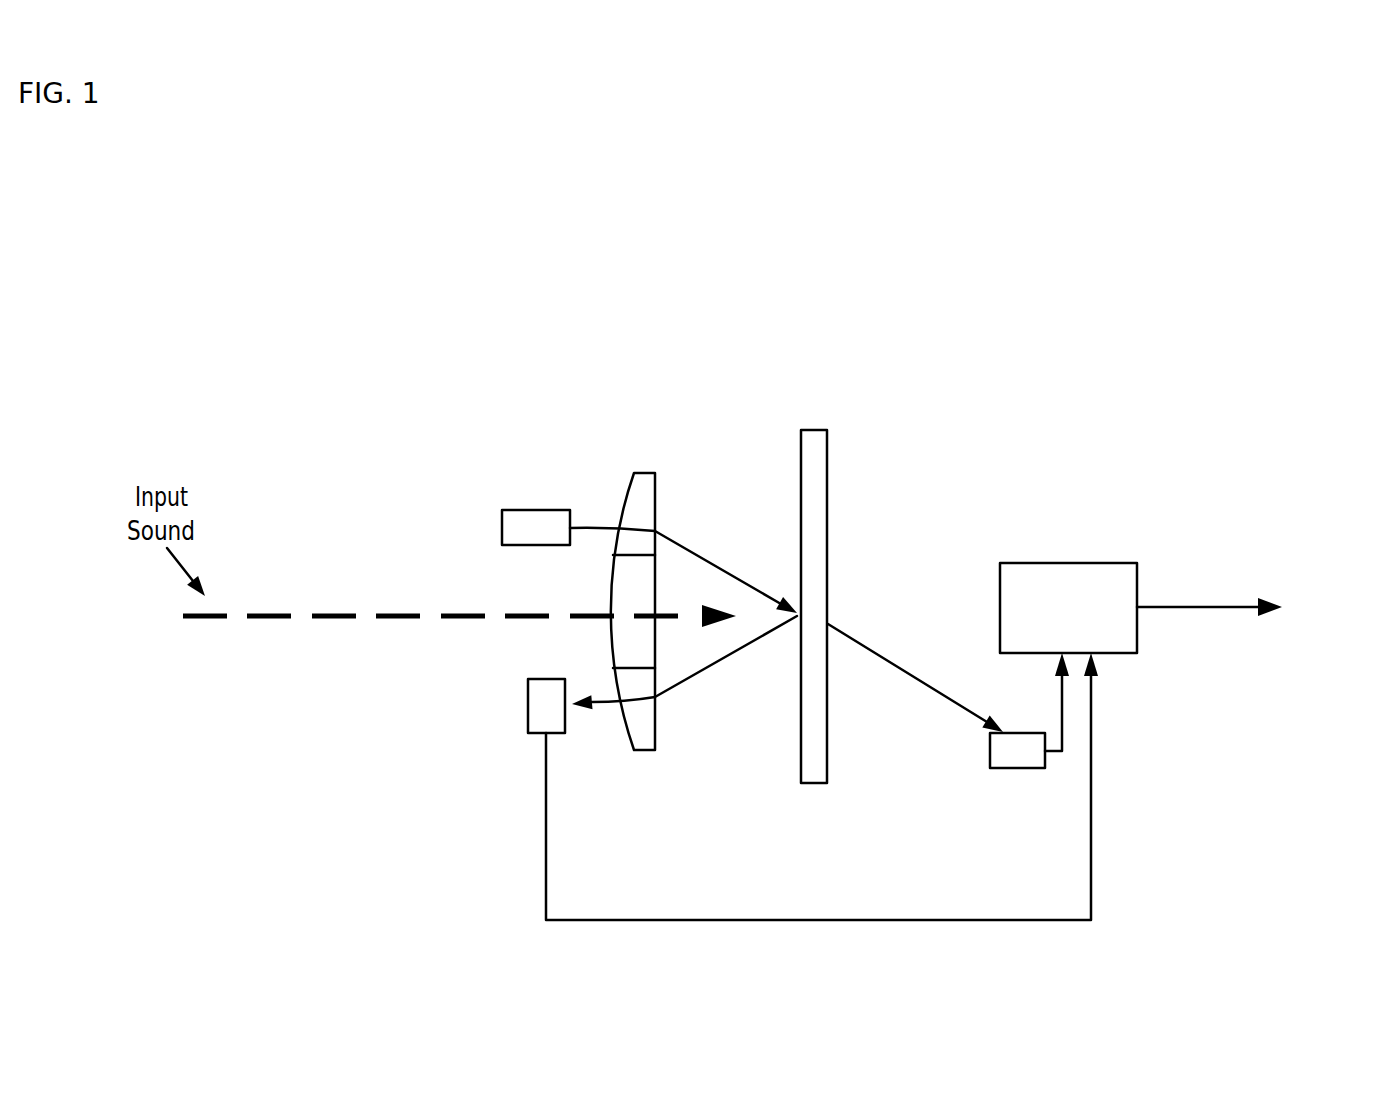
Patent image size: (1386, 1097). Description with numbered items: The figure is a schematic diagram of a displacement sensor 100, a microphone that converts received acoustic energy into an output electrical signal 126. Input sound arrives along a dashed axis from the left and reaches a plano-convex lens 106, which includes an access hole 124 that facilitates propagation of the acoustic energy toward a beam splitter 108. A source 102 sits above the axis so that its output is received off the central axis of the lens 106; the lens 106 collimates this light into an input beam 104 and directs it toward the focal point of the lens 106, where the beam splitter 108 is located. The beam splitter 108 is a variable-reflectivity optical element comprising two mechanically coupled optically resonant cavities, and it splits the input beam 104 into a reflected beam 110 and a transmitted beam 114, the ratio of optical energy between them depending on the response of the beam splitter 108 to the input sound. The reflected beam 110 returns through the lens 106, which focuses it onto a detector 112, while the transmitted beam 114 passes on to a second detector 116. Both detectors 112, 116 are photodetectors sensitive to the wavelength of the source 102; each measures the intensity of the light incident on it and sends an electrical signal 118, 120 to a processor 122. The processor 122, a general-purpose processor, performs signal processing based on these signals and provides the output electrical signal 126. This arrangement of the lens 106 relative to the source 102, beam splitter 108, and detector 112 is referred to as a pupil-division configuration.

The displacement sensor 100 is at (441, 262).
The source 102 is at (534, 510).
The input beam 104 is at (676, 543).
The lens 106 is at (635, 473).
The beam splitter 108 is at (816, 490).
The reflected beam 110 is at (676, 686).
The detector 112 is at (528, 733).
The transmitted beam 114 is at (953, 700).
The detector 116 is at (1013, 770).
The electrical signal 118 is at (1092, 778).
The electrical signal 120 is at (1065, 683).
The processor 122 is at (1088, 563).
The access hole 124 is at (620, 633).
The output electrical signal 126 is at (1208, 607).